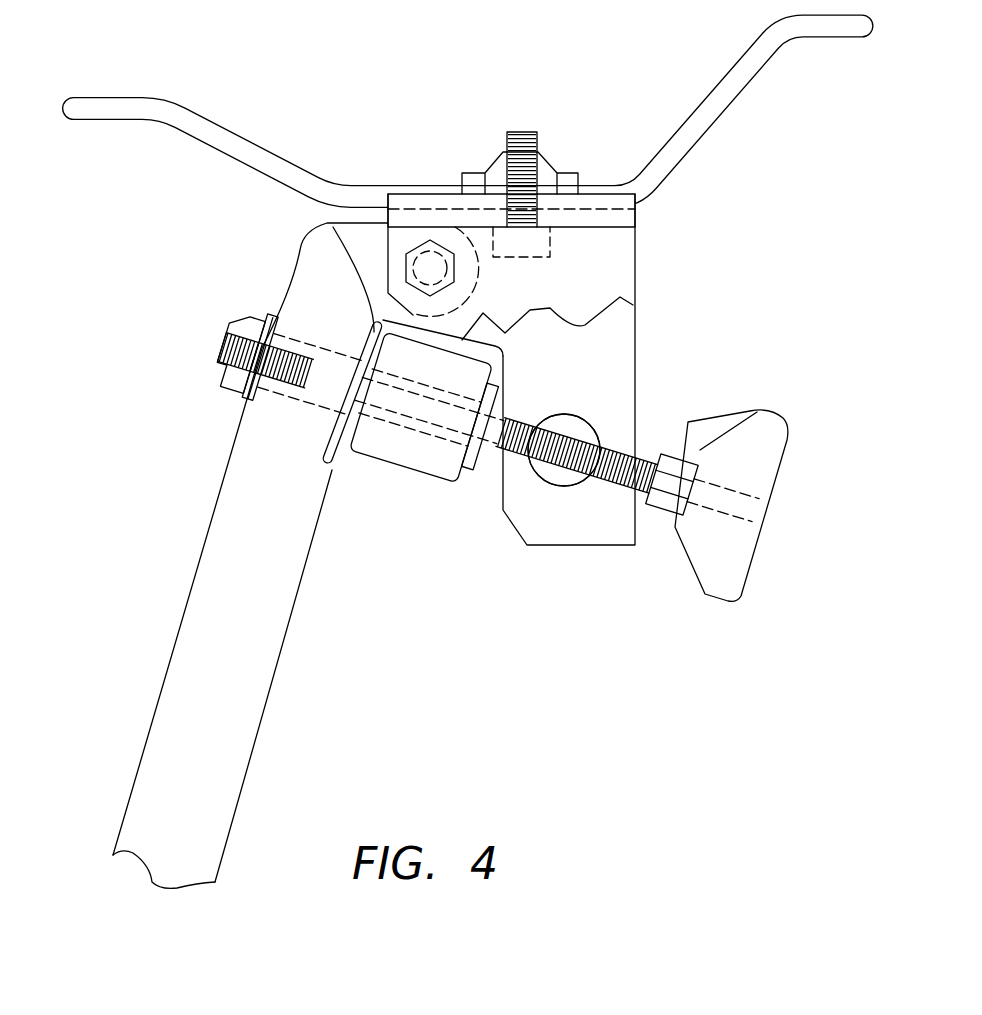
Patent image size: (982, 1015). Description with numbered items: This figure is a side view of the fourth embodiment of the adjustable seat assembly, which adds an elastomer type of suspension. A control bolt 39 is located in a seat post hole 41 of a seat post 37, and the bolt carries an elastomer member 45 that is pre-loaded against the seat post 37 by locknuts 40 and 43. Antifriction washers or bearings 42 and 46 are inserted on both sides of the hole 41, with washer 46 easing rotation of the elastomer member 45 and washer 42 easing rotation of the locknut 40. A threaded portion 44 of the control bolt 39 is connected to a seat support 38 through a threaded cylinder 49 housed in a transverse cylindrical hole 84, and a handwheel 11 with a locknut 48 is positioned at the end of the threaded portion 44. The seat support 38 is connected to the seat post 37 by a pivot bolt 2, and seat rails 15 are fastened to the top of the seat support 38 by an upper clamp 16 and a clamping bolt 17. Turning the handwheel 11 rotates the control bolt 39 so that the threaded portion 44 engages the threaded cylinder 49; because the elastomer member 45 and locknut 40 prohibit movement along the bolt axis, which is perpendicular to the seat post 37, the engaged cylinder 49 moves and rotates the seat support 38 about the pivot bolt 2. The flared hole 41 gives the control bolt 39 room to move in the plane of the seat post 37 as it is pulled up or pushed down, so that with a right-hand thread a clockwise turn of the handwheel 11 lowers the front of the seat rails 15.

The pivot bolt 2 is at (433, 265).
The handwheel 11 is at (725, 550).
The seat rails 15 is at (727, 95).
The upper clamp 16 is at (492, 165).
The clamping bolt 17 is at (538, 133).
The seat post 37 is at (280, 557).
The seat support 38 is at (618, 255).
The control bolt 39 is at (320, 468).
The locknut 40 is at (245, 320).
The seat post hole 41 is at (343, 347).
The antifriction washer 42 is at (248, 397).
The locknut 43 is at (508, 487).
The threaded portion 44 is at (637, 448).
The elastomer member 45 is at (414, 458).
The antifriction washer 46 is at (347, 382).
The locknut 48 is at (690, 418).
The threaded cylinder 49 is at (577, 415).
The transverse cylindrical hole 84 is at (600, 428).